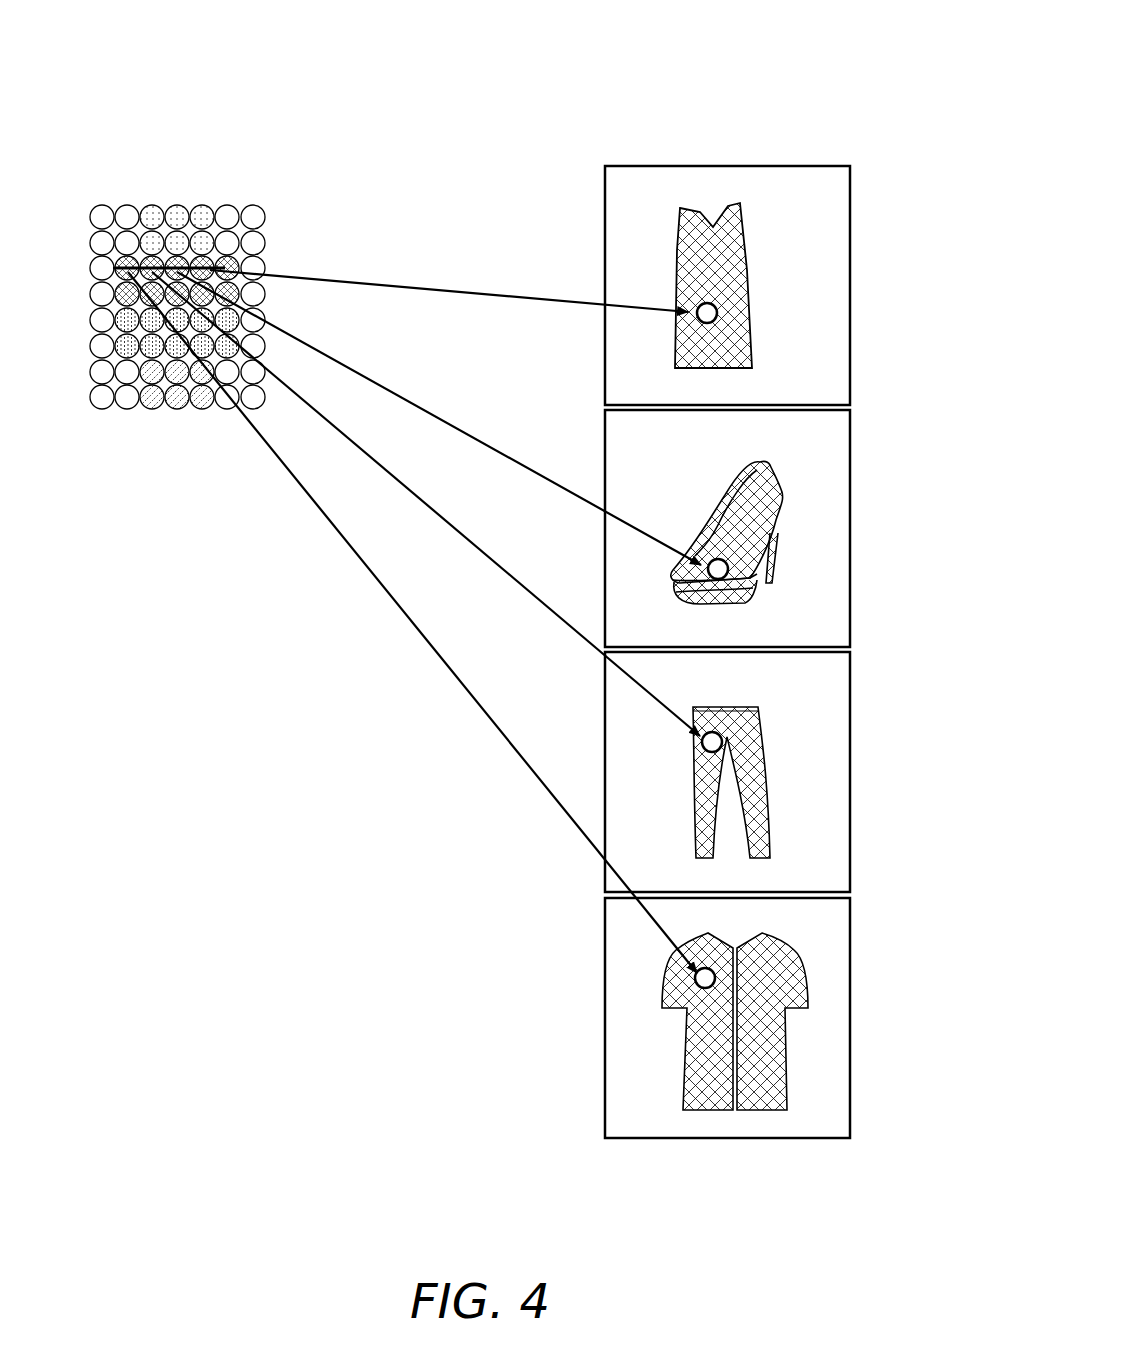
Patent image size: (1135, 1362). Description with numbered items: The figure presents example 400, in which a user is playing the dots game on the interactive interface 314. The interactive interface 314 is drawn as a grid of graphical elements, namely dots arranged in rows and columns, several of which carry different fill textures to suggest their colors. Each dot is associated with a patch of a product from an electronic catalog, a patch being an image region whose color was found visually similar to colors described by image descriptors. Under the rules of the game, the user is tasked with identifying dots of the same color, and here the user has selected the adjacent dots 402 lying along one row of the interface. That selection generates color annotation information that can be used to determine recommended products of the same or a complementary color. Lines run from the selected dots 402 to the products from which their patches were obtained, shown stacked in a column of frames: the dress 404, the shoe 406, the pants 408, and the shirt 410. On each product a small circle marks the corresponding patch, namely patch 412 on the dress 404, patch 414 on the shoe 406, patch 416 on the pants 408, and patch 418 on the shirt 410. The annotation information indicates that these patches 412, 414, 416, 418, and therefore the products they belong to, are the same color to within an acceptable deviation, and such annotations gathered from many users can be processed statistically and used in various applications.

The example 400 is at (892, 117).
The interactive interface 314 is at (260, 228).
The adjacent dots 402 is at (140, 268).
The dress 404 is at (605, 176).
The shoe 406 is at (605, 428).
The pants 408 is at (605, 683).
The shirt 410 is at (605, 933).
The patch 412 is at (717, 312).
The patch 414 is at (728, 570).
The patch 416 is at (722, 742).
The patch 418 is at (713, 974).